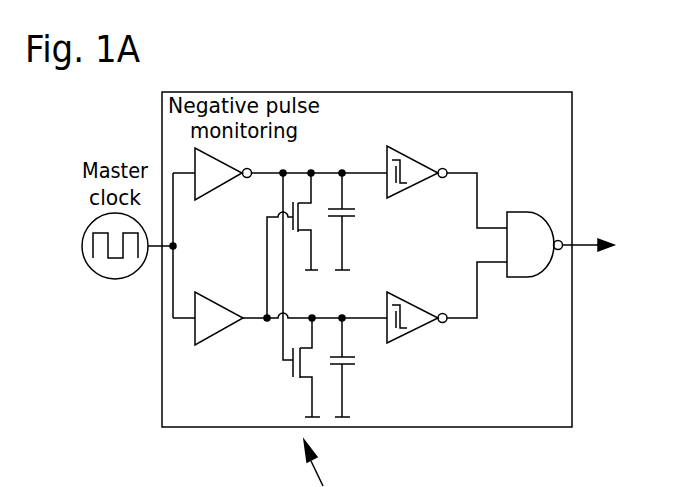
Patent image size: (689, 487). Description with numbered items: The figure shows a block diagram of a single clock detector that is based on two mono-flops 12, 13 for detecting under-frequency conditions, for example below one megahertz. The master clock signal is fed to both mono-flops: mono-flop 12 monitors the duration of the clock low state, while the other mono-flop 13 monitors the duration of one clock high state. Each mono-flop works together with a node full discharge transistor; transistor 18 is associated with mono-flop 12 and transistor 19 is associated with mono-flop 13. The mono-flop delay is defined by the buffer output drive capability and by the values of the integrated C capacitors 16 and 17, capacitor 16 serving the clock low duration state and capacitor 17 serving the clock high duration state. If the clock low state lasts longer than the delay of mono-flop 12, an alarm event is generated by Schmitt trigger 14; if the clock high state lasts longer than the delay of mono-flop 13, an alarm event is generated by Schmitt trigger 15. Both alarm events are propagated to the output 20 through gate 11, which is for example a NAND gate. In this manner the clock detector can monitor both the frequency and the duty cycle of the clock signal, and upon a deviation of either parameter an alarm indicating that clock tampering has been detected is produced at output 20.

The gate 11 is at (537, 231).
The mono-flop 12 is at (198, 163).
The mono-flop 13 is at (200, 333).
The Schmitt trigger 14 is at (412, 170).
The Schmitt trigger 15 is at (420, 327).
The integrated C capacitor 16 is at (345, 208).
The integrated C capacitor 17 is at (352, 365).
The node full discharge transistor 18 is at (301, 202).
The node full discharge transistor 19 is at (305, 378).
The output 20 is at (609, 245).